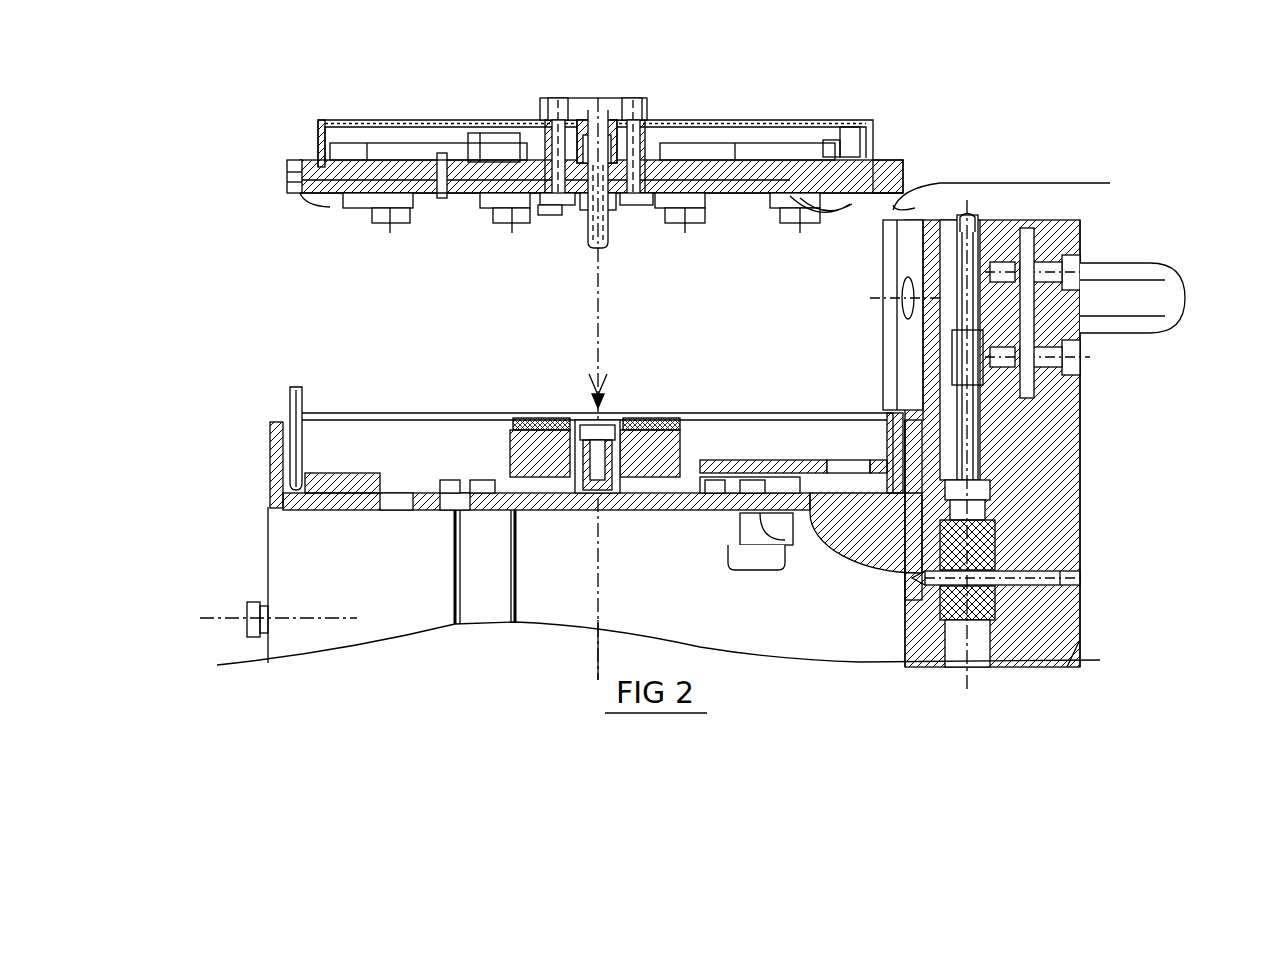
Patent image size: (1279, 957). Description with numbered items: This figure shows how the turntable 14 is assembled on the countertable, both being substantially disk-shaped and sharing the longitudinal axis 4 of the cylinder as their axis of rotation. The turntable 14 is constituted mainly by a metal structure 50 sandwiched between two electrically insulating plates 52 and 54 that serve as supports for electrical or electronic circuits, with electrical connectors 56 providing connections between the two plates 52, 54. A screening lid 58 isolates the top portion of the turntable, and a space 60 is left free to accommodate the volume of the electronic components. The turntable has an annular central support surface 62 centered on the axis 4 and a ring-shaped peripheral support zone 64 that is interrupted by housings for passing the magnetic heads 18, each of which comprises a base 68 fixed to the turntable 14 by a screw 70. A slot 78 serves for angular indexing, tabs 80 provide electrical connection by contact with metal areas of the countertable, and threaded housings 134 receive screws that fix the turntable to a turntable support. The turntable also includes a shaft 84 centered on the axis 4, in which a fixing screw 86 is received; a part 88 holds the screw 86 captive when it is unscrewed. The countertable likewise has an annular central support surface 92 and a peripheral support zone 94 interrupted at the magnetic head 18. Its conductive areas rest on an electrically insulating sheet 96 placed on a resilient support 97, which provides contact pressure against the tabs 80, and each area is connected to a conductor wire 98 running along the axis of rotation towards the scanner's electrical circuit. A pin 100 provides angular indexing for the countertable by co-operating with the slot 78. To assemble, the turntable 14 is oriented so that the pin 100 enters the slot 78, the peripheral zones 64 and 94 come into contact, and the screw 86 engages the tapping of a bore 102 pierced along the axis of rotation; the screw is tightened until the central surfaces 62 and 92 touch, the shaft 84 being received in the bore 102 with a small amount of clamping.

The longitudinal axis 4 is at (593, 650).
The turntable 14 is at (900, 135).
The magnetic head 18 is at (290, 210).
The metal structure 50 is at (905, 165).
The electrically insulating plate 52 is at (780, 165).
The electrically insulating plate 54 is at (750, 207).
The electrical connector 56 is at (700, 130).
The screening lid 58 is at (822, 120).
The space 60 is at (430, 125).
The central support surface 62 is at (612, 200).
The peripheral support zone 64 is at (897, 208).
The base 68 is at (372, 225).
The screw 70 is at (400, 238).
The slot 78 is at (292, 190).
The tab 80 is at (545, 215).
The shaft 84 is at (575, 215).
The screw 86 is at (608, 228).
The part 88 is at (582, 115).
The central support surface 92 is at (575, 420).
The peripheral support zone 94 is at (885, 410).
The electrically insulating sheet 96 is at (530, 418).
The resilient support 97 is at (662, 418).
The conductor wire 98 is at (617, 513).
The pin 100 is at (290, 407).
The bore 102 is at (590, 507).
The threaded housing 134 is at (550, 120).